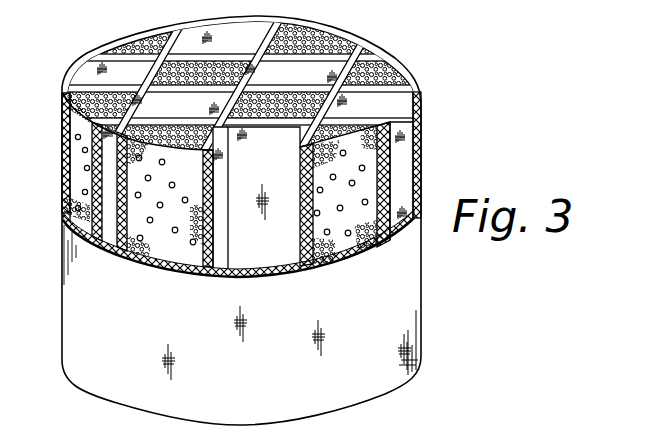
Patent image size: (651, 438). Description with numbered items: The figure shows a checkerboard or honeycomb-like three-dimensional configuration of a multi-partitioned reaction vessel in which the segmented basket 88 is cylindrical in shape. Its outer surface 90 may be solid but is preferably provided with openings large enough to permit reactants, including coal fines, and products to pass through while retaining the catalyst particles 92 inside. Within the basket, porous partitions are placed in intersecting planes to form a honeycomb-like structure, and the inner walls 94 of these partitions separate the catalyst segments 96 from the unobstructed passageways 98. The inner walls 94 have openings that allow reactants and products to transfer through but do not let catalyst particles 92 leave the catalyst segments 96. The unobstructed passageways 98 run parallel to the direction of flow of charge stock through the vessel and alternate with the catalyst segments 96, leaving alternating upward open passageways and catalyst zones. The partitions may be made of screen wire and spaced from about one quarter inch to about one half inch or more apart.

The segmented basket 88 is at (431, 82).
The outer surface 90 is at (408, 288).
The catalyst particles 92 is at (87, 168).
The inner walls 94 is at (218, 226).
The catalyst segments 96 is at (157, 38).
The unobstructed passageways 98 is at (237, 38).